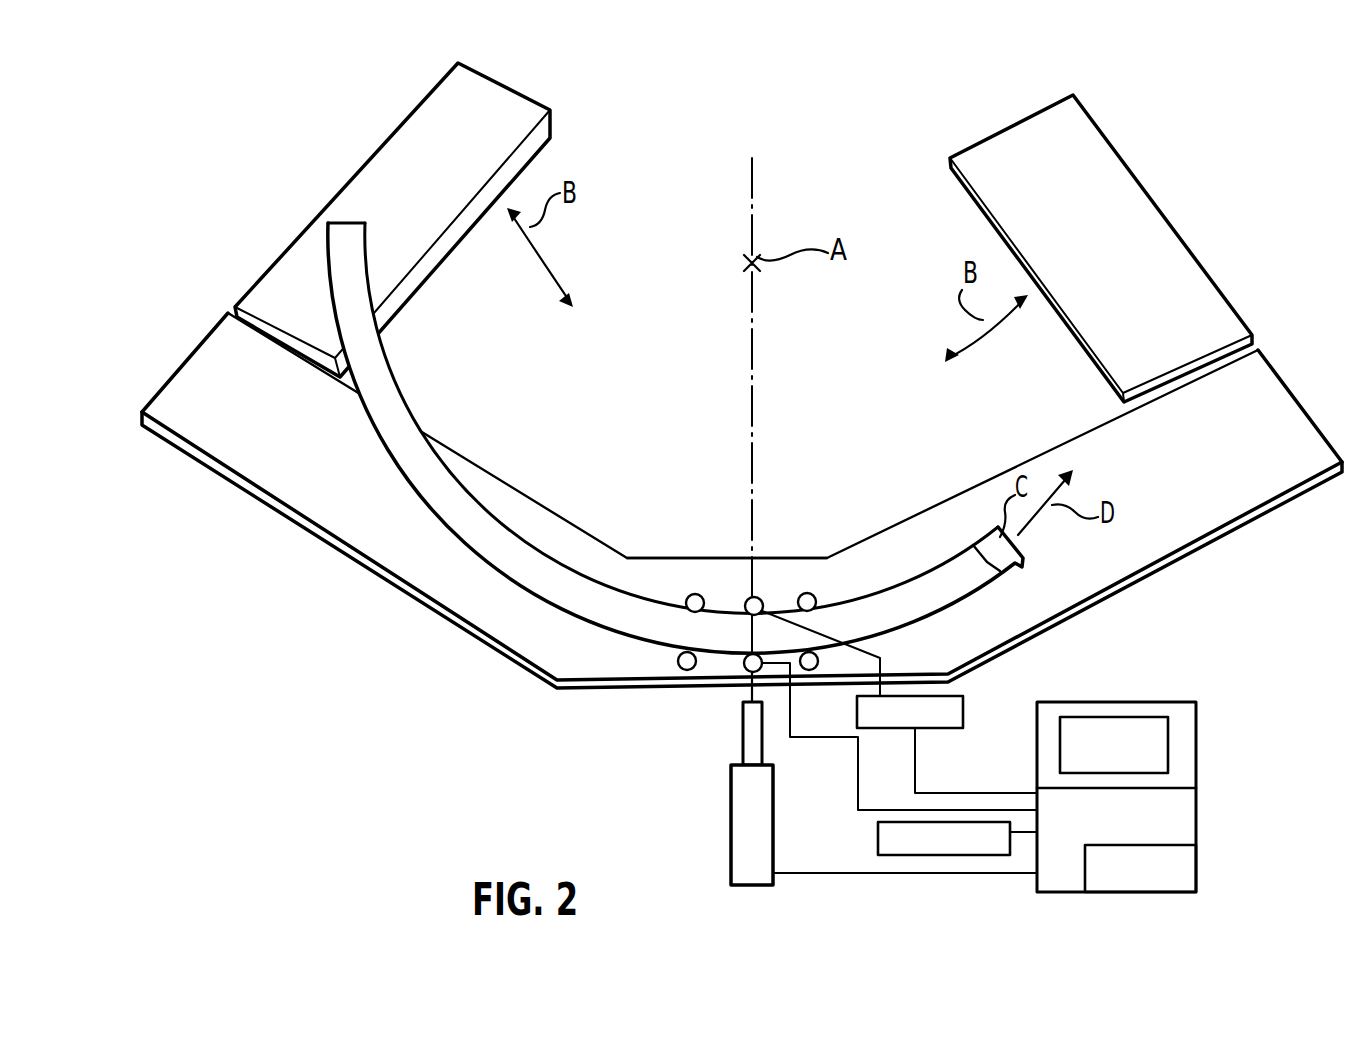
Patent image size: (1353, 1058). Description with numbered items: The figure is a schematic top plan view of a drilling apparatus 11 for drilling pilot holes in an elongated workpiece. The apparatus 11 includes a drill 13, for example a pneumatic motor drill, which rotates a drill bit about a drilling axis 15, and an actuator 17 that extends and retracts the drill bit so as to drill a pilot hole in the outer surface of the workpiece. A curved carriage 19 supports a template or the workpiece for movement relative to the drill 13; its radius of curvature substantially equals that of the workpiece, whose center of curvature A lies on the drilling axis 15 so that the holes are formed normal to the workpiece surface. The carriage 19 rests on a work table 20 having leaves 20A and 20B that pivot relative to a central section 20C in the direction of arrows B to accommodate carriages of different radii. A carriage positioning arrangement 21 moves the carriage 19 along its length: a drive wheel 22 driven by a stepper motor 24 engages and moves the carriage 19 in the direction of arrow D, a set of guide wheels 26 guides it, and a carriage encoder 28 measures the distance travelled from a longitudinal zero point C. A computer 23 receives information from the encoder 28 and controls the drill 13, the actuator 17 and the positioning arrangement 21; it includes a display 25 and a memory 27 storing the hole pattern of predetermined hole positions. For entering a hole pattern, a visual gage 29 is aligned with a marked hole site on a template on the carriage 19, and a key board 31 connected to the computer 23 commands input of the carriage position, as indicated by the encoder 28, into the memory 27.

The drilling apparatus 11 is at (822, 503).
The drill 13 is at (743, 747).
The drilling axis 15 is at (753, 443).
The actuator 17 is at (740, 822).
The carriage 19 is at (375, 372).
The work table 20 is at (490, 472).
The leaf 20A is at (523, 110).
The leaf 20B is at (993, 148).
The central section 20C is at (665, 573).
The carriage positioning arrangement 21 is at (920, 653).
The drive wheel 22 is at (758, 598).
The computer 23 is at (1157, 788).
The stepper motor 24 is at (965, 710).
The display 25 is at (1180, 727).
The guide wheels 26 is at (697, 594).
The memory 27 is at (1188, 870).
The carriage encoder 28 is at (745, 672).
The visual gage 29 is at (748, 692).
The key board 31 is at (878, 832).